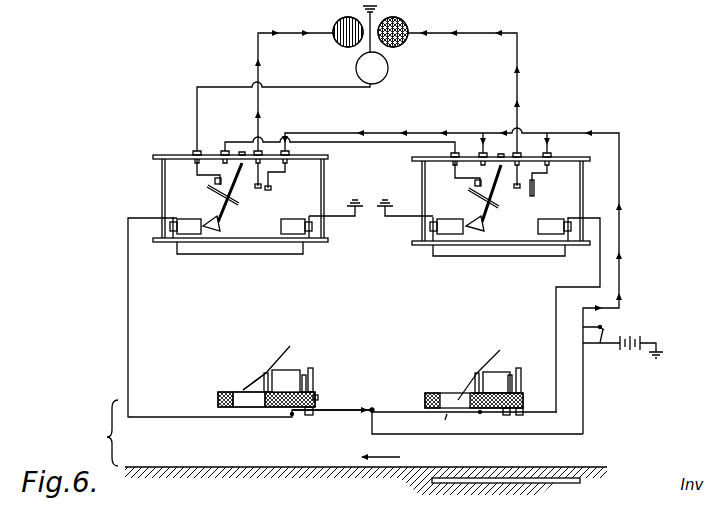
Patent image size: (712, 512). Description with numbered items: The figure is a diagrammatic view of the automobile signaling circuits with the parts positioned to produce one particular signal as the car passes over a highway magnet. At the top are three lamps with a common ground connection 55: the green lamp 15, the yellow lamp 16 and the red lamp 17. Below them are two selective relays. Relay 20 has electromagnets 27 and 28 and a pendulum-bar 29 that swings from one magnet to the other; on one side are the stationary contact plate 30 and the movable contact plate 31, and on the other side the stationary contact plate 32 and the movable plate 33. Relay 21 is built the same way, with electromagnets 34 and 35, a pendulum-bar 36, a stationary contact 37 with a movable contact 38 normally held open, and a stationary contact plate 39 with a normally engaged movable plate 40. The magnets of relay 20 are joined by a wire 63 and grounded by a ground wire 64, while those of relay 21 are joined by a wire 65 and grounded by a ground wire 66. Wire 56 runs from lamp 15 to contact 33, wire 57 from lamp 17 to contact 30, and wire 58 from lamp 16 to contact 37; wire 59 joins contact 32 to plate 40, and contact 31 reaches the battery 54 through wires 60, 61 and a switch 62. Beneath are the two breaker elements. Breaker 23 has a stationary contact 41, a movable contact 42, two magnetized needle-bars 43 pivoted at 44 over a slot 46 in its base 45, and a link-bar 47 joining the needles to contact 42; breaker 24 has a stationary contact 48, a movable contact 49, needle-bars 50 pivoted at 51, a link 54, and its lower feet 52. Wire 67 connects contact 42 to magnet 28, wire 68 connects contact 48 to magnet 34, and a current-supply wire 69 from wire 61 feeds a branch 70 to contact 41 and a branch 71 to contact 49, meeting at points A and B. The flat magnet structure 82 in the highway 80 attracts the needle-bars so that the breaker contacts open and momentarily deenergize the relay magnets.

The lamp 15 is at (388, 68).
The lamp 16 is at (410, 28).
The lamp 17 is at (336, 24).
The selective relay 20 is at (162, 186).
The selective relay 21 is at (422, 186).
The breaker element 23 is at (218, 397).
The breaker element 24 is at (425, 397).
The electromagnet 27 is at (290, 221).
The electromagnet 28 is at (195, 220).
The pendulum-bar 29 is at (222, 215).
The stationary contact plate 30 is at (257, 180).
The movable contact plate 31 is at (276, 190).
The stationary contact plate 32 is at (209, 172).
The movable plate 33 is at (208, 188).
The electromagnet 34 is at (550, 221).
The electromagnet 35 is at (452, 220).
The pendulum-bar 36 is at (480, 220).
The stationary contact 37 is at (517, 188).
The movable contact 38 is at (536, 195).
The stationary contact plate 39 is at (468, 173).
The movable plate 40 is at (468, 190).
The stationary contact 41 is at (314, 382).
The movable contact 42 is at (313, 370).
The needle-bars 43 is at (305, 356).
The pivot 44 is at (267, 372).
The base 45 is at (318, 400).
The slot 46 is at (240, 408).
The link-bar 47 is at (286, 381).
The stationary contact 48 is at (513, 375).
The movable contact 49 is at (519, 367).
The needle-bars 50 is at (467, 386).
The pivot 51 is at (477, 372).
The contact 52 is at (523, 404).
The link-bar 54 is at (636, 352).
The common ground connection 55 is at (378, 12).
The wire connection 56 is at (198, 118).
The wire 57 is at (293, 35).
The wire 58 is at (473, 35).
The wire 59 is at (238, 141).
The wire 60 is at (388, 132).
The wire 61 is at (590, 343).
The switch 62 is at (606, 330).
The branch 63 is at (549, 140).
The ground wire 64 is at (345, 219).
The wire 65 is at (505, 258).
The ground wire 66 is at (400, 218).
The wire connection 67 is at (129, 282).
The wire connection 68 is at (595, 216).
The current supply wire 69 is at (374, 427).
The branch 70 is at (355, 414).
The branch 71 is at (454, 423).
The highway 80 is at (435, 470).
The highway magnet structure 82 is at (505, 468).
The junction A is at (289, 425).
The junction B is at (480, 422).